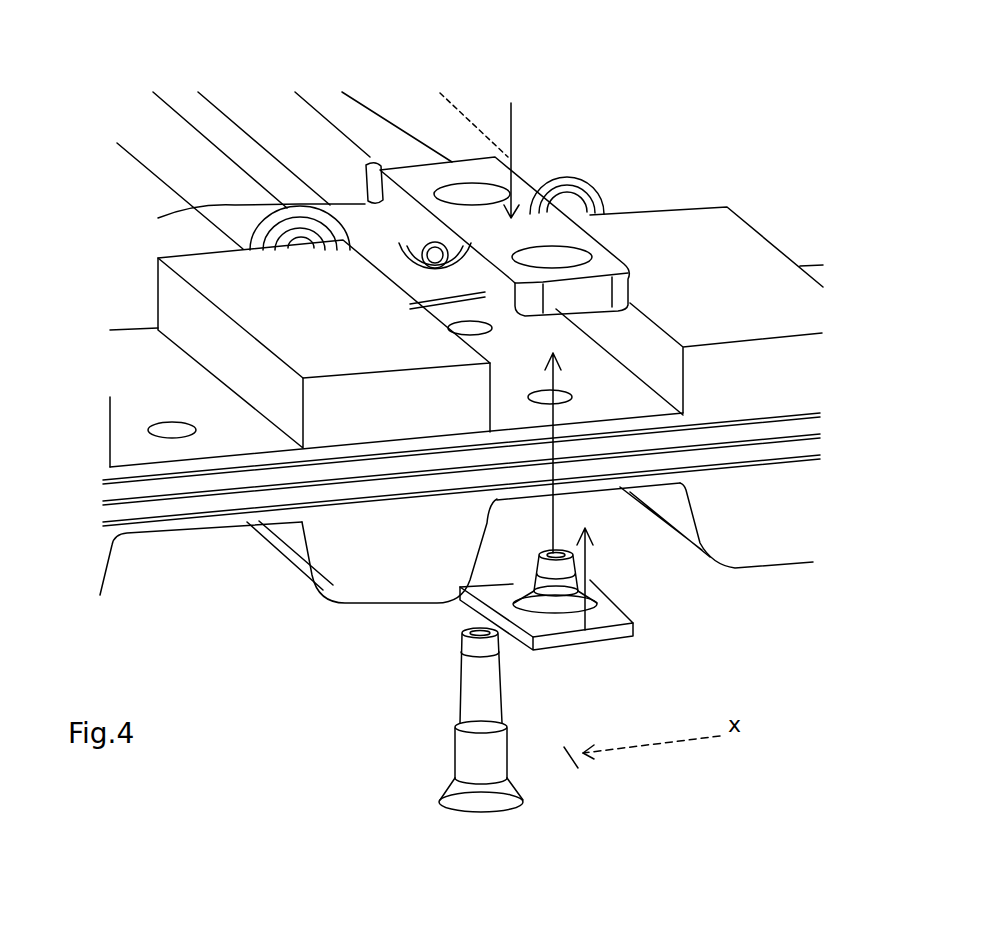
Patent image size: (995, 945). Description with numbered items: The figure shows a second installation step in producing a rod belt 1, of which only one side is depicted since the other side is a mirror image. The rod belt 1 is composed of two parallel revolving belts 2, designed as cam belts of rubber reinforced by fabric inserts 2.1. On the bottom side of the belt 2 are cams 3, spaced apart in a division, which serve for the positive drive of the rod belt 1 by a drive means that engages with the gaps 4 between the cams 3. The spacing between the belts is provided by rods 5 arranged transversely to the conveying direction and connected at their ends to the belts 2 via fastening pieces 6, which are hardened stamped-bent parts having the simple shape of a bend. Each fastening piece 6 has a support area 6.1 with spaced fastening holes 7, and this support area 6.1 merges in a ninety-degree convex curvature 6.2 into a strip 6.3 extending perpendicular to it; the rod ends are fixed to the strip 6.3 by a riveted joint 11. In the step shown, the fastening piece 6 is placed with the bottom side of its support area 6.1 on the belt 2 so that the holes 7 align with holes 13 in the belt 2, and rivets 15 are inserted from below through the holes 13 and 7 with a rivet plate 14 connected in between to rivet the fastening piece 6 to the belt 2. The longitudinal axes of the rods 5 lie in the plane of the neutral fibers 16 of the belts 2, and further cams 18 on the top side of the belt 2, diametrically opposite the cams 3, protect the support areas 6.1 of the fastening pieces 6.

The rod belt 1 is at (602, 33).
The revolving belt 2 is at (107, 368).
The fabric insert 2.1 is at (163, 520).
The cam 3 is at (380, 583).
The gap 4 is at (207, 553).
The rod 5 is at (137, 122).
The fastening piece 6 is at (600, 247).
The support area 6.1 is at (538, 223).
The convex curvature 6.2 is at (372, 180).
The strip 6.3 is at (569, 190).
The fastening hole 7 is at (468, 197).
The riveted joint 11 is at (307, 237).
The hole 13 is at (570, 398).
The rivet plate 14 is at (627, 637).
The rivet 15 is at (567, 692).
The neutral fiber 16 is at (308, 484).
The cam 18 is at (207, 273).